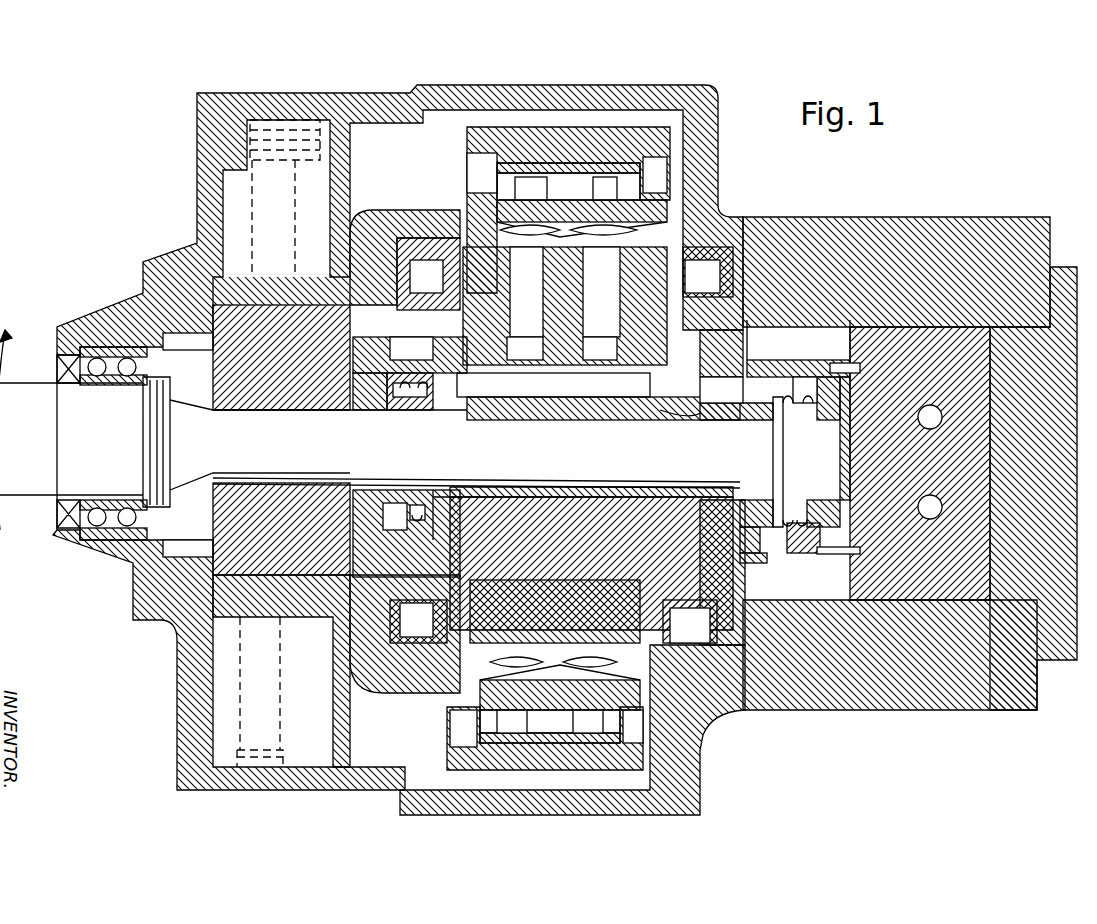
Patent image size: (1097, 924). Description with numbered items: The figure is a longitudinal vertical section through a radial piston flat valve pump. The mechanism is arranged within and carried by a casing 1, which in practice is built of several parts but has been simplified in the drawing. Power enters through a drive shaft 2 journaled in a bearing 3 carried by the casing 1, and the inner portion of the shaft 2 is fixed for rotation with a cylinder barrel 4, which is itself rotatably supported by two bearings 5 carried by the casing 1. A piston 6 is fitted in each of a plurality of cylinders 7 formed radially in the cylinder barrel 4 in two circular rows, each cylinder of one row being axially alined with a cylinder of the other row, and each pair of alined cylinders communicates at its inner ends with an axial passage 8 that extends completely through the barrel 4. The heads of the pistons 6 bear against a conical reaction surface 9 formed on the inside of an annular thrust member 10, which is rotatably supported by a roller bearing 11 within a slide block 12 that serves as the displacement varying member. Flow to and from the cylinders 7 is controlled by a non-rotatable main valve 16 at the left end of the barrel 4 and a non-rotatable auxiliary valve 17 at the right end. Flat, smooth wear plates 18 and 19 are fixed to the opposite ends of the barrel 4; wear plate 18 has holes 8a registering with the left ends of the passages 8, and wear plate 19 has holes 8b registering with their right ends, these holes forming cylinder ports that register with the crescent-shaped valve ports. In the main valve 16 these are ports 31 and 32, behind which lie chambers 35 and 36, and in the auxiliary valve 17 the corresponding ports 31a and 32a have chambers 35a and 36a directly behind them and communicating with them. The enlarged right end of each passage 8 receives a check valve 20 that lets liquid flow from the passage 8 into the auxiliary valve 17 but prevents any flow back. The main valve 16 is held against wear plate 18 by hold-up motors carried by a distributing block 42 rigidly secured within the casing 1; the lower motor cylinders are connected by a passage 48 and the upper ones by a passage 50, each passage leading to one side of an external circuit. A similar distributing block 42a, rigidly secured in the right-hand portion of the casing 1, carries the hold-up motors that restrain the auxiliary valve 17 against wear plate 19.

The casing 1 is at (690, 787).
The drive shaft 2 is at (533, 187).
The bearing 3 is at (277, 170).
The cylinder barrel 4 is at (570, 552).
The bearings 5 is at (421, 287).
The piston 6 is at (521, 291).
The cylinders 7 is at (520, 358).
The axial passage 8 is at (551, 394).
The holes 8a is at (463, 417).
The holes 8b is at (721, 390).
The conical reaction surface 9 is at (490, 220).
The annular thrust member 10 is at (465, 718).
The roller bearing 11 is at (557, 455).
The slide block 12 is at (467, 140).
The main valve 16 is at (372, 395).
The auxiliary valve 17 is at (797, 365).
The wear plate 18 is at (445, 495).
The wear plate 19 is at (752, 497).
The check valve 20 is at (690, 420).
The crescent shaped port 31 is at (418, 510).
The crescent shaped port 31a is at (795, 500).
The crescent shaped port 32 is at (412, 397).
The crescent shaped port 32a is at (790, 484).
The chamber 35 is at (395, 508).
The chamber 35a is at (800, 520).
The chamber 36 is at (398, 397).
The chamber 36a is at (793, 410).
The distributing block 42 is at (258, 410).
The distributing block 42a is at (920, 463).
The passage 48 is at (257, 538).
The passage 50 is at (262, 372).